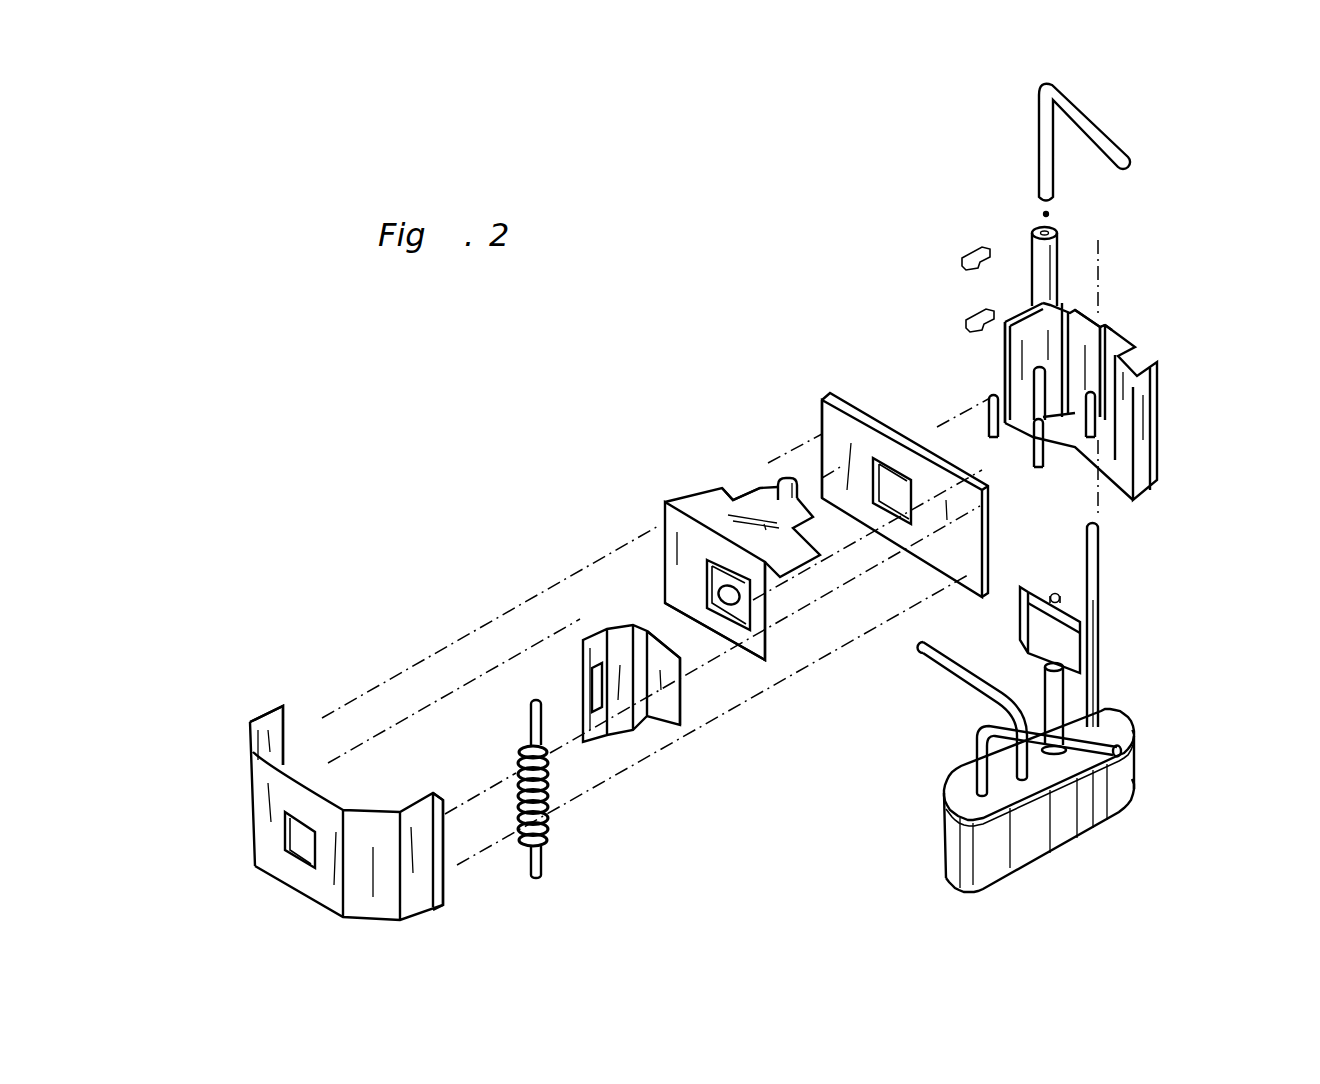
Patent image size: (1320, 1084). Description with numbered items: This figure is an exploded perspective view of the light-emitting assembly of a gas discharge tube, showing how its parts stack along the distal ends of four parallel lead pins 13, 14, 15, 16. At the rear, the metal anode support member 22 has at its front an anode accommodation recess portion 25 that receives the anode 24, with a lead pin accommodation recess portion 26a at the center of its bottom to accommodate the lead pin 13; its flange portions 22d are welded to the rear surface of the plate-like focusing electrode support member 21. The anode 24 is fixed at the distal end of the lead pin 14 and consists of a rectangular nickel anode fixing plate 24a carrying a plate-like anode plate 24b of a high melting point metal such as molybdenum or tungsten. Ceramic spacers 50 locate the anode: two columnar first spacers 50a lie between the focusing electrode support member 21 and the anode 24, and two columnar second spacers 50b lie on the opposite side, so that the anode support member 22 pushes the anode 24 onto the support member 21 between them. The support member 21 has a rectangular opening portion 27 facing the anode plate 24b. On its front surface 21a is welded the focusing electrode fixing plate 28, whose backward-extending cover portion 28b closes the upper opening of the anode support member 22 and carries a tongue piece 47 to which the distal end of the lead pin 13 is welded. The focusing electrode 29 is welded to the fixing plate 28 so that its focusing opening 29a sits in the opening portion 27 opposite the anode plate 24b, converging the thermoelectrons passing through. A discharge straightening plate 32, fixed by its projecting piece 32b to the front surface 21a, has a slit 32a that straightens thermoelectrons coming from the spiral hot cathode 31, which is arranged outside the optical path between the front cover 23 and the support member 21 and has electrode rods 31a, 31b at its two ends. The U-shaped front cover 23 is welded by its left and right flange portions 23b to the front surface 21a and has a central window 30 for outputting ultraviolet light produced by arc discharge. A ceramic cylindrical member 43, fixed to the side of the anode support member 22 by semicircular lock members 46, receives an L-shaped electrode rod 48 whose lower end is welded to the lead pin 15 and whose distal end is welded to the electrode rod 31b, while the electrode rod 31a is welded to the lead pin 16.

The lead pin 13 is at (1100, 578).
The lead pin 14 is at (1052, 597).
The lead pin 15 is at (950, 678).
The lead pin 16 is at (1128, 735).
The focusing electrode support member 21 is at (869, 499).
The front surface 21a is at (826, 432).
The anode support member 22 is at (1058, 372).
The flange portions 22d is at (1006, 350).
The front cover 23 is at (358, 781).
The flange portions 23b is at (272, 705).
The anode 24 is at (1145, 670).
The anode fixing plate 24a is at (1085, 630).
The anode plate 24b is at (1062, 655).
The anode accommodation recess portion 25 is at (1100, 318).
The lead pin accommodation recess portion 26a is at (1112, 322).
The opening portion 27 is at (893, 500).
The focusing electrode fixing plate 28 is at (662, 526).
The cover portion 28b is at (717, 512).
The focusing electrode 29 is at (665, 553).
The focusing opening 29a is at (715, 594).
The window 30 is at (300, 845).
The hot cathode 31 is at (544, 803).
The electrode rod 31a is at (548, 862).
The electrode rod 31b is at (532, 726).
The discharge straightening plate 32 is at (651, 714).
The slit 32a is at (595, 692).
The projecting piece 32b is at (683, 717).
The cylindrical member 43 is at (1057, 257).
The lock members 46 is at (964, 256).
The tongue piece 47 is at (781, 494).
The electrode rod 48 is at (1040, 131).
The pin set 50 is at (1003, 456).
The first spacers 50a is at (990, 398).
The second spacers 50b is at (1040, 371).